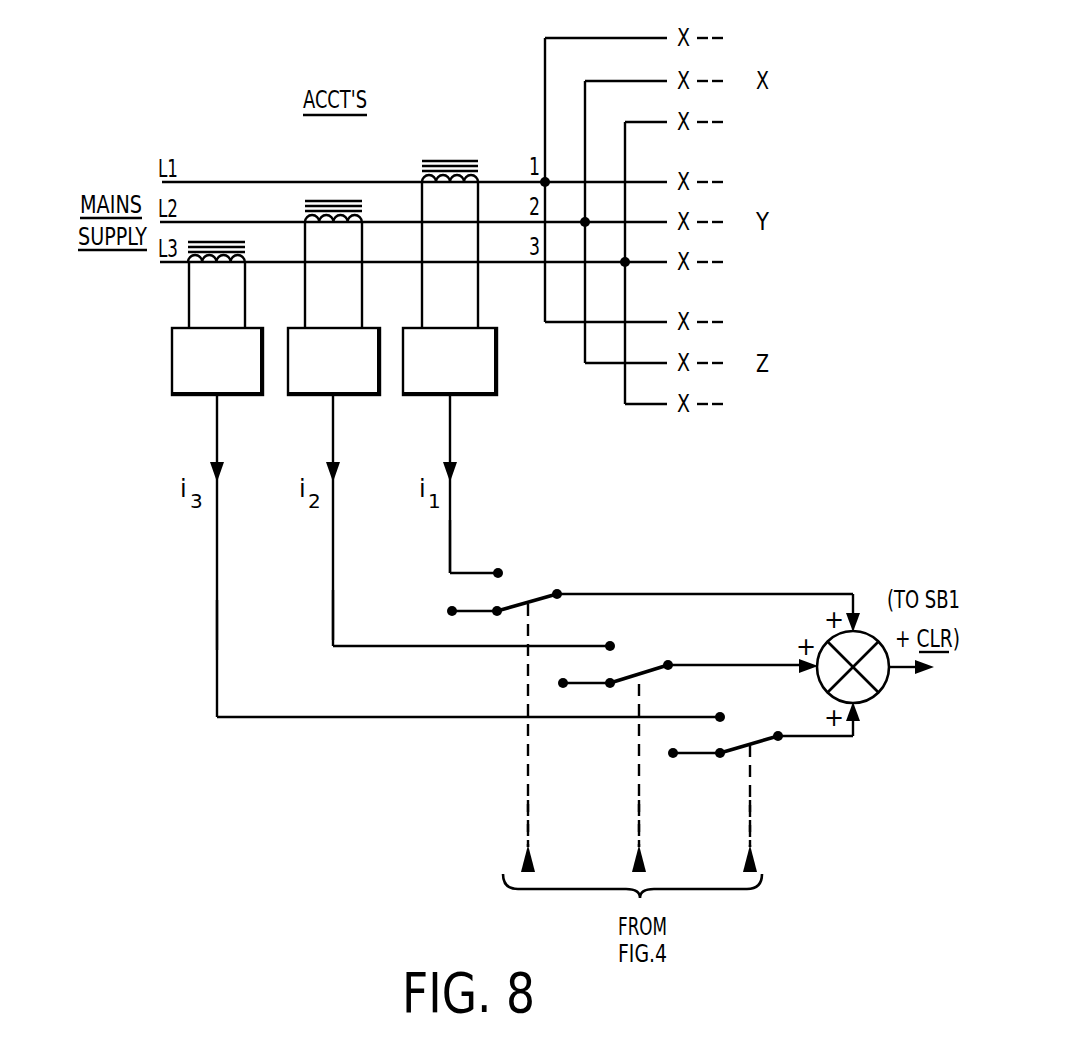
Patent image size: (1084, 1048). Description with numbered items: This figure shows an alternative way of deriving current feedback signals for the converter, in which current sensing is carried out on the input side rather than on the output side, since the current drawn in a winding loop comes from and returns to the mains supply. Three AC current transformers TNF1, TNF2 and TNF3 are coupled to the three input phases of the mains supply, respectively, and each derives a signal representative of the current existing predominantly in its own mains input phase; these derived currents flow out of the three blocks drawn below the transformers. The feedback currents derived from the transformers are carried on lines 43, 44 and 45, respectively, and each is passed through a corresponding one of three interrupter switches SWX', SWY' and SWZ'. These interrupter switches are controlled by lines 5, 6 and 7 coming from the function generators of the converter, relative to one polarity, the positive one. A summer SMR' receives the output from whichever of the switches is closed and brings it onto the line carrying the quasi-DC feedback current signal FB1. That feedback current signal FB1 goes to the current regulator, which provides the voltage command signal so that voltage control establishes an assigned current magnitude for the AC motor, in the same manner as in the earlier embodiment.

The AC current transformer TNF1 is at (452, 157).
The AC current transformer TNF2 is at (346, 199).
The AC current transformer TNF3 is at (196, 268).
The feedback current line 43 is at (216, 624).
The feedback current line 44 is at (332, 614).
The feedback current line 45 is at (448, 552).
The interrupter switch SWX' is at (653, 593).
The interrupter switch SWY' is at (688, 658).
The interrupter switch SWZ' is at (764, 739).
The summer SMR' is at (847, 625).
The quasi-DC feedback current signal FB1 is at (897, 671).
The control line 5 is at (526, 845).
The control line 6 is at (637, 845).
The control line 7 is at (749, 845).